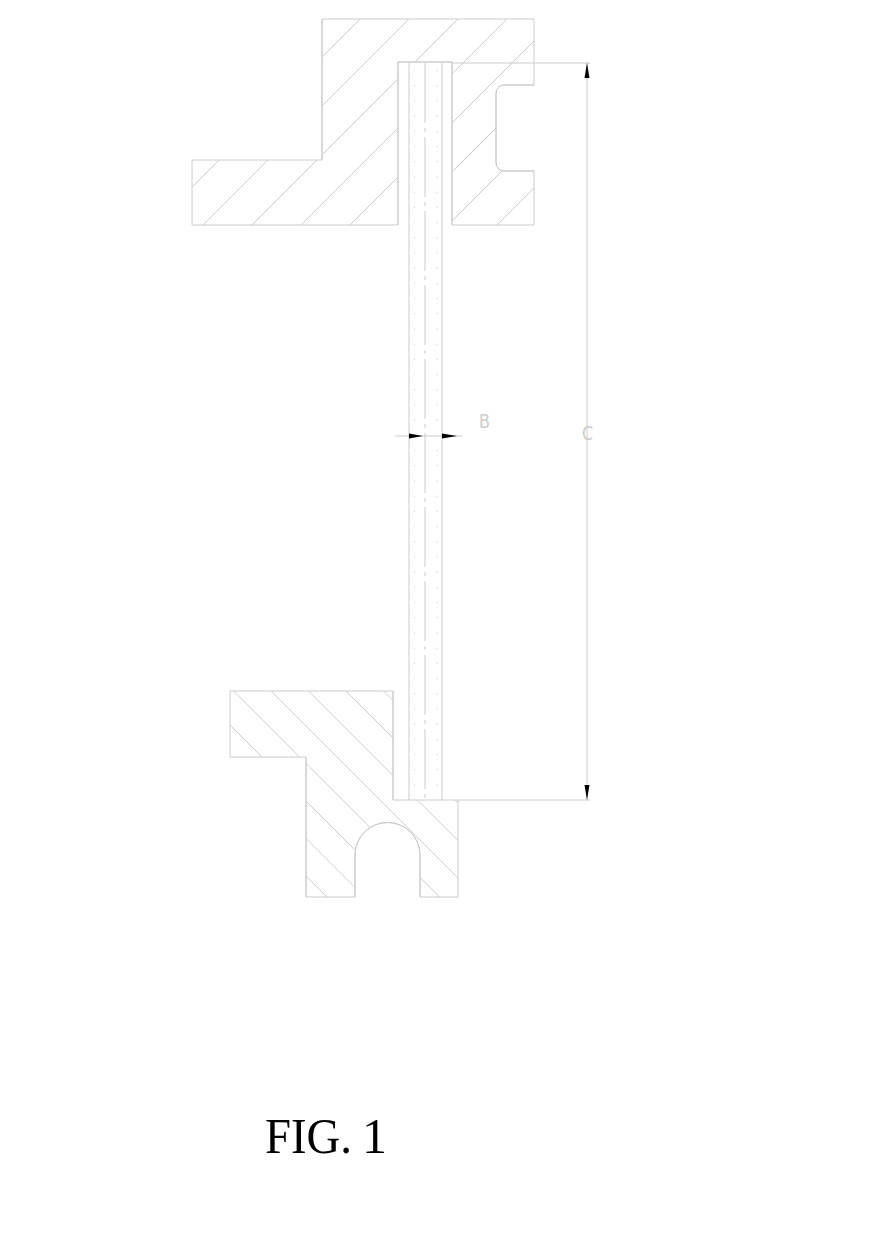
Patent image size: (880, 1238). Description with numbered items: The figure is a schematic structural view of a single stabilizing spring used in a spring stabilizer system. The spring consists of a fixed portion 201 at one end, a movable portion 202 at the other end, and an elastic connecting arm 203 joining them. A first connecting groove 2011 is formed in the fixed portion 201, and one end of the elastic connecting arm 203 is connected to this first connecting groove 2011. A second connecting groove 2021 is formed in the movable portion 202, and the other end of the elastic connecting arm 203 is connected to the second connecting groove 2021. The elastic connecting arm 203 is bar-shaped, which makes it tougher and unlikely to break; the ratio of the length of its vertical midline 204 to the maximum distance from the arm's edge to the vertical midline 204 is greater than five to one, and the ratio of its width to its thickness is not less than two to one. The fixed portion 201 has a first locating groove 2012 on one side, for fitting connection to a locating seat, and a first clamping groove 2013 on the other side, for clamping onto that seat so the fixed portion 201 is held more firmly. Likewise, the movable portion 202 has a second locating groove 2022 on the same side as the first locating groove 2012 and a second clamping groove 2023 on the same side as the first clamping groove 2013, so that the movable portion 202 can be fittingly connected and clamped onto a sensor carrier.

The fixed portion 201 is at (202, 208).
The first connecting groove 2011 is at (404, 192).
The first locating groove 2012 is at (263, 123).
The first clamping groove 2013 is at (506, 137).
The movable portion 202 is at (243, 713).
The second connecting groove 2021 is at (402, 734).
The second locating groove 2022 is at (265, 807).
The second clamping groove 2023 is at (382, 874).
The elastic connecting arm 203 is at (406, 558).
The vertical midline 204 is at (424, 667).